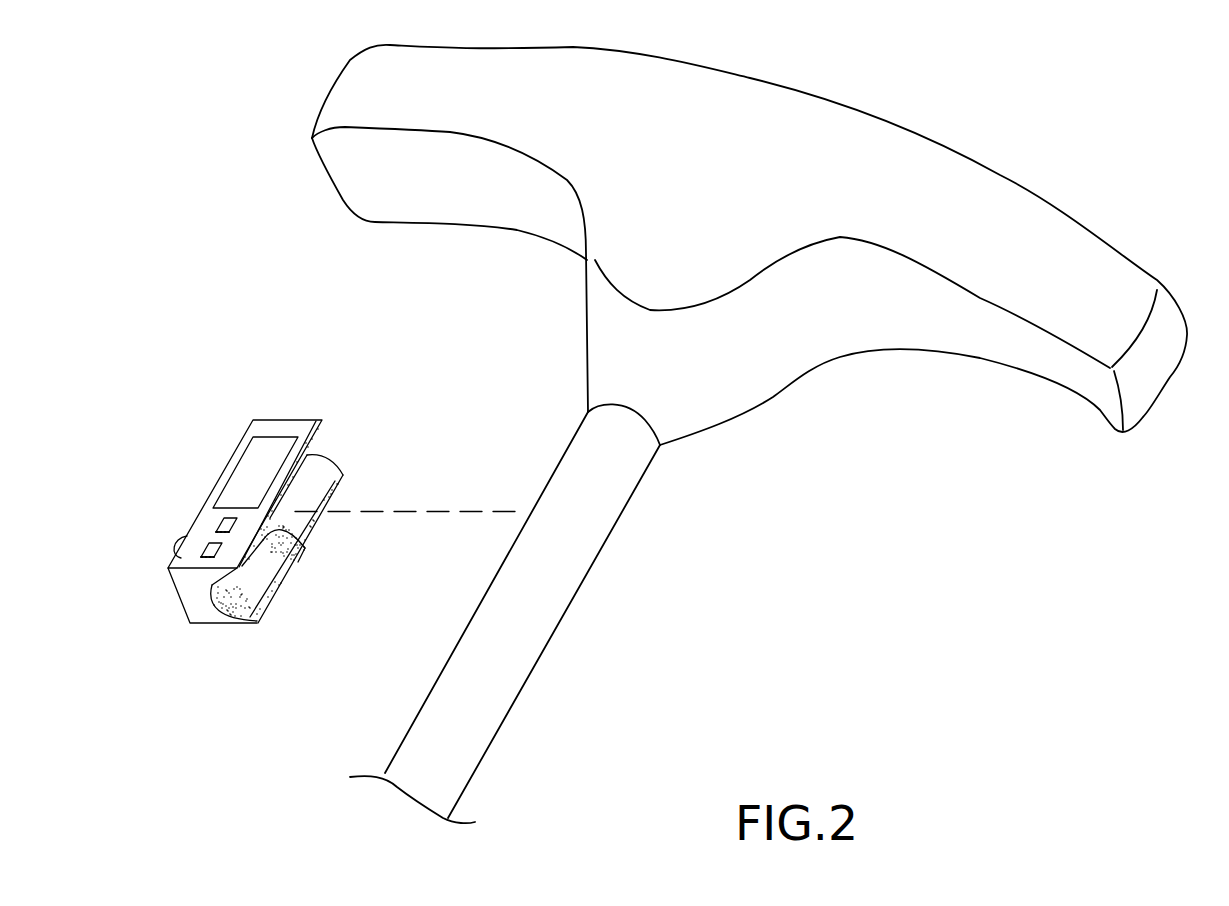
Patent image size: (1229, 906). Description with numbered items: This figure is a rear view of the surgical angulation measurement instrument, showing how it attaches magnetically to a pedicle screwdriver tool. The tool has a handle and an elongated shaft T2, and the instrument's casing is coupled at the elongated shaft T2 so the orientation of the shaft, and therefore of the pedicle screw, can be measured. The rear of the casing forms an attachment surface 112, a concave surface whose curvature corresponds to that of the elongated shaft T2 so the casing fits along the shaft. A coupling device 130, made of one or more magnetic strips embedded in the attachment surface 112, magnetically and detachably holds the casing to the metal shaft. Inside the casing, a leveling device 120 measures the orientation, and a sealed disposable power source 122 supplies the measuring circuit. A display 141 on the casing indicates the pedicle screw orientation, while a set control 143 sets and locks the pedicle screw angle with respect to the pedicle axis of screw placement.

The elongated shaft T2 is at (533, 588).
The attachment surface 112 is at (320, 487).
The coupling device 130 is at (302, 532).
The display 141 is at (265, 453).
The leveling device 120 is at (227, 518).
The power source 122 is at (205, 543).
The set control 143 is at (173, 543).